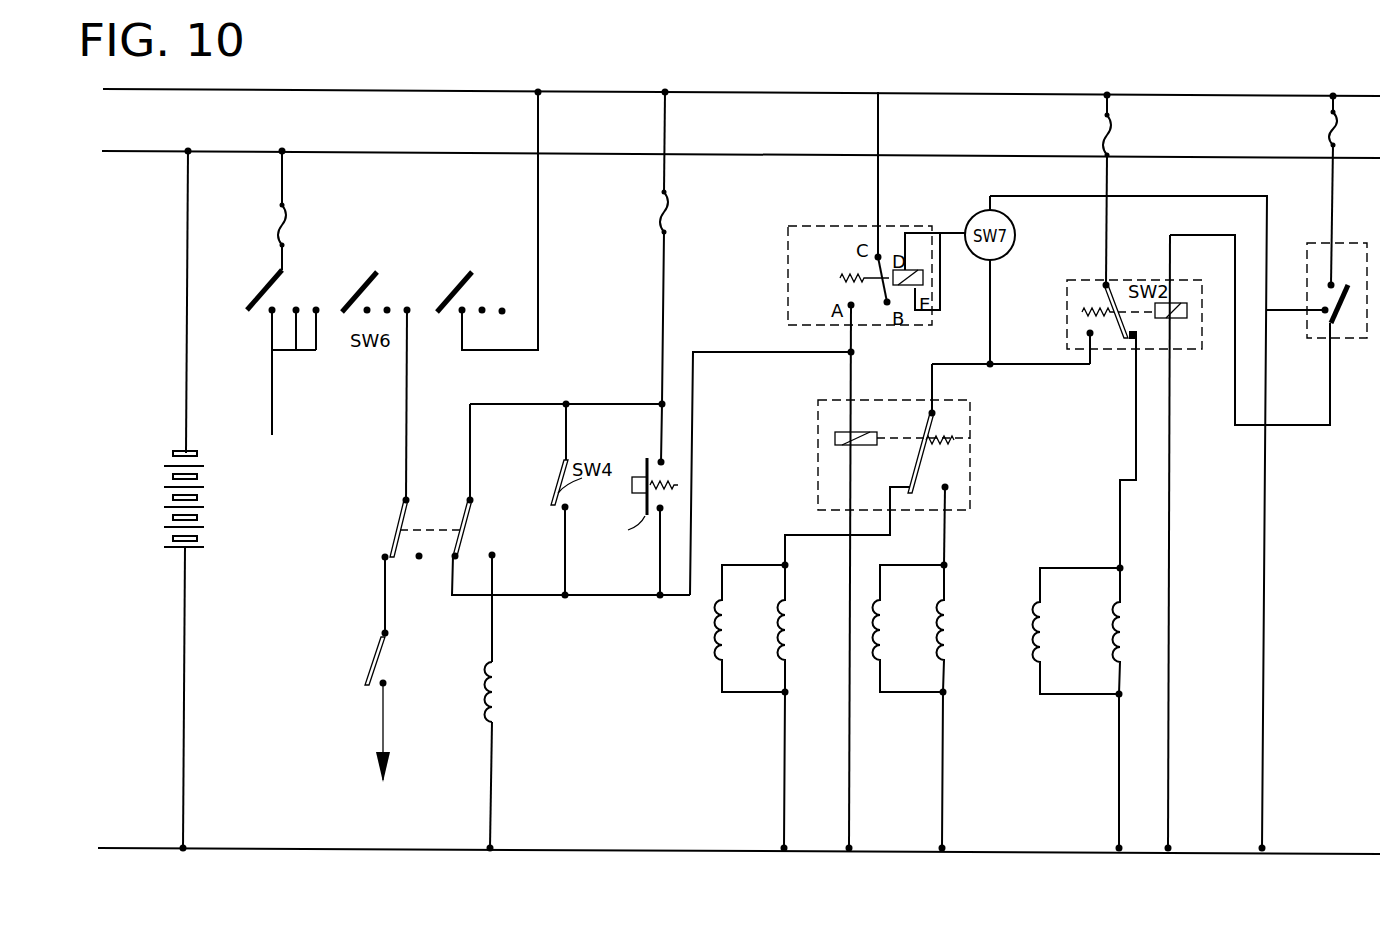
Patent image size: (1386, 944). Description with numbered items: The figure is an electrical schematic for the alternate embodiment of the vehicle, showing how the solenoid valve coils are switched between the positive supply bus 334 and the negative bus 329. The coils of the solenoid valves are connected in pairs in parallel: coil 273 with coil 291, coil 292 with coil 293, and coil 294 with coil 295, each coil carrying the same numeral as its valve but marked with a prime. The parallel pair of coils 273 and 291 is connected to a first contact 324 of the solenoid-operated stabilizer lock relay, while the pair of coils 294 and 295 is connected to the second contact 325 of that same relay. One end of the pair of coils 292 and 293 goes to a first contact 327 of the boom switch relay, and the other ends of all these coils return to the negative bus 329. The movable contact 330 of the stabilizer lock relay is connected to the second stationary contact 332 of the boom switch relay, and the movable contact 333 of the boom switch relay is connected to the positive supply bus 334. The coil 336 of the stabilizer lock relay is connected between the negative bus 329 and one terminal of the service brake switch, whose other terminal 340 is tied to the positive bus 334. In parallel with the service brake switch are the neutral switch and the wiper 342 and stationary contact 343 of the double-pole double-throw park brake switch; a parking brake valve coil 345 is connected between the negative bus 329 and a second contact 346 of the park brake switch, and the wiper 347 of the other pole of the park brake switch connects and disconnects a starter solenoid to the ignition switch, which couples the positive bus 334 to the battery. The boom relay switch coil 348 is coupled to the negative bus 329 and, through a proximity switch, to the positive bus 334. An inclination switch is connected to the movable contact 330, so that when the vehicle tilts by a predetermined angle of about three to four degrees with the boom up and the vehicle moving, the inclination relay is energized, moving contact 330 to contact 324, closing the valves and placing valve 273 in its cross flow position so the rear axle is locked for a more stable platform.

The positive supply bus 334 is at (940, 93).
The negative bus 329 is at (1078, 852).
The terminal of service brake switch 340 is at (663, 462).
The wiper of park brake switch 342 is at (468, 528).
The stationary contact of park brake switch 343 is at (452, 557).
The parking brake valve coil 345 is at (496, 692).
The second contact of park brake switch 346 is at (494, 556).
The wiper of other pole of park brake switch 347 is at (398, 532).
The coil of relay SW1 336 is at (826, 436).
The second contact of stabilizer lock relay 325 is at (908, 488).
The first contact of stabilizer lock switch 324 is at (948, 487).
The movable contact of switch SW1 330 is at (937, 425).
The second stationary contact of relay SW2 332 is at (1067, 340).
The movable contact of switch SW2 333 is at (1084, 312).
The first contact of boom switch relay 327 is at (1137, 340).
The boom relay switch coil 348 is at (1188, 311).
The solenoid valve coil 294 is at (718, 652).
The solenoid valve coil 295 is at (790, 646).
The solenoid valve coil 273 is at (888, 630).
The solenoid valve coil 291 is at (950, 632).
The solenoid valve coil 292 is at (1048, 633).
The solenoid valve coil 293 is at (1124, 635).